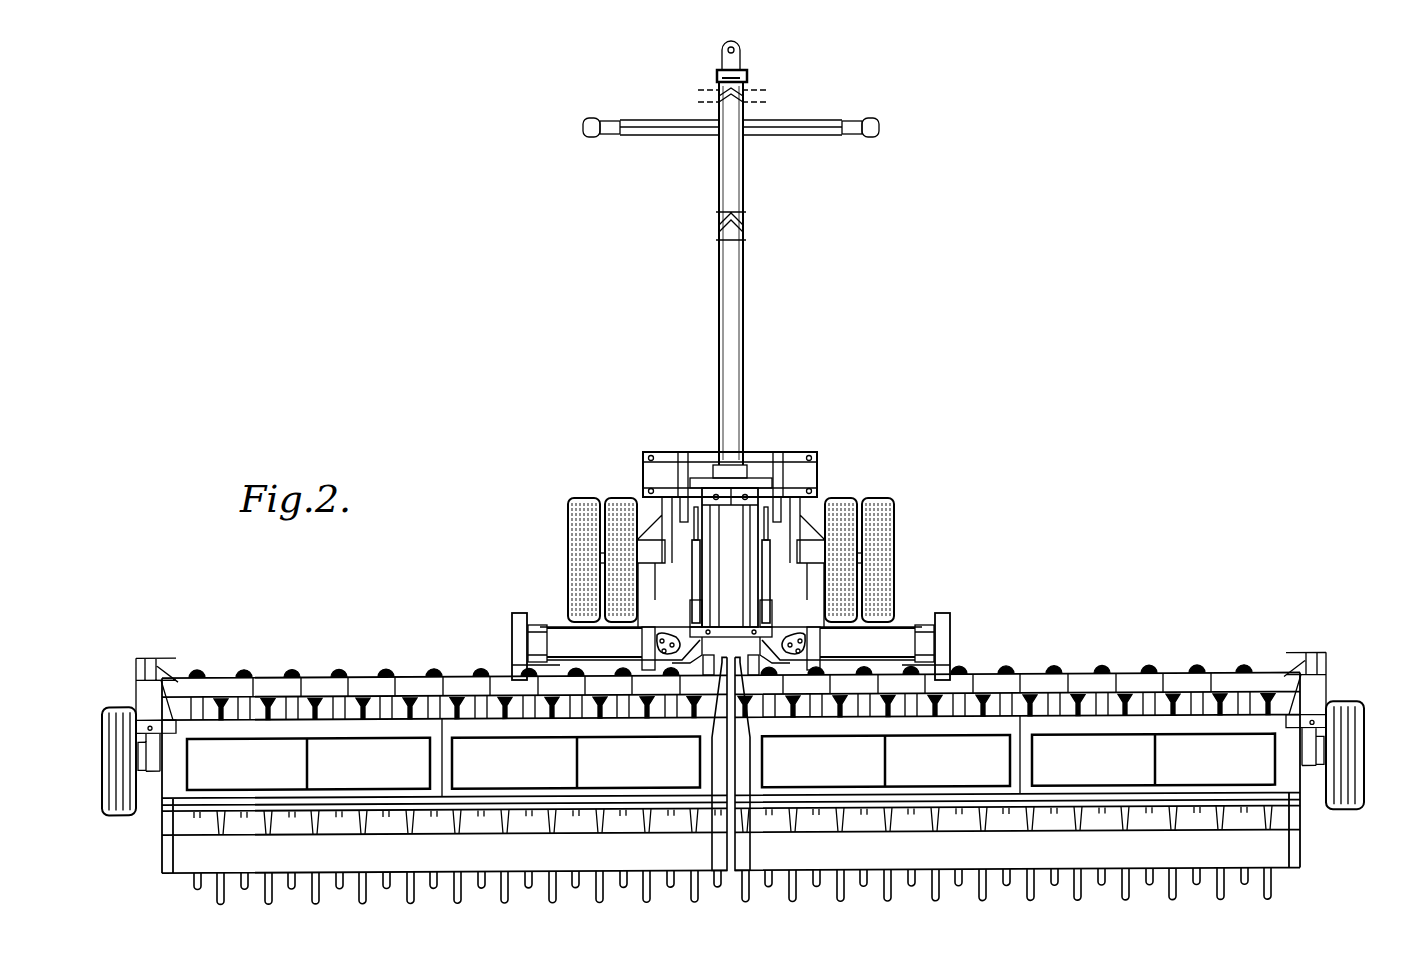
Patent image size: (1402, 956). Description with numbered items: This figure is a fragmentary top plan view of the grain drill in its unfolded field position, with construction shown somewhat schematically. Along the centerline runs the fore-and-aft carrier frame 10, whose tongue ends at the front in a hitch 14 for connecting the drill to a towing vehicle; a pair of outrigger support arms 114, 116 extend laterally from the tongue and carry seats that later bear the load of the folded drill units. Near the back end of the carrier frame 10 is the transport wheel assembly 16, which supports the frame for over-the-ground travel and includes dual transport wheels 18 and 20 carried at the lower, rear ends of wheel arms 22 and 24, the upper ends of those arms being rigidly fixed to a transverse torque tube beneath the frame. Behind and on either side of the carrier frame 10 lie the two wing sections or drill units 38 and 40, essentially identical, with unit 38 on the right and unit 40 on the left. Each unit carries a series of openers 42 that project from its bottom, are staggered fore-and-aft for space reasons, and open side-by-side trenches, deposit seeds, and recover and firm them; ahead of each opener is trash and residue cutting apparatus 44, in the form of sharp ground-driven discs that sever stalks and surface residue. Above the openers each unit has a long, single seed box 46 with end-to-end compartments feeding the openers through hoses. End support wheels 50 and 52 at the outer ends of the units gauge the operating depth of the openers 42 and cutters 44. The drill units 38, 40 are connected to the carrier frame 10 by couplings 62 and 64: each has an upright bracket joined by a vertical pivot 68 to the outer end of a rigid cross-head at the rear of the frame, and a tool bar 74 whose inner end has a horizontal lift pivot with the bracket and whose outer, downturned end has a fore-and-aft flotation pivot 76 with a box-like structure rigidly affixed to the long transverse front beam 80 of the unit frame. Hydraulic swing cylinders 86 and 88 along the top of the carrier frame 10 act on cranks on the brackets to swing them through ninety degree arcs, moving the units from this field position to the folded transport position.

The carrier frame 10 is at (779, 338).
The hitch 14 is at (738, 48).
The transport wheel assembly 16 is at (899, 487).
The dual transport wheel 18 is at (832, 500).
The dual transport wheel 20 is at (580, 500).
The wheel arm 22 is at (790, 545).
The wheel arm 24 is at (665, 545).
The drill unit 38 is at (1212, 646).
The drill unit 40 is at (320, 638).
The opener 42 is at (215, 826).
The trash and residue cutting apparatus 44 is at (245, 702).
The seed box 46 is at (490, 760).
The end support wheel 50 is at (1325, 800).
The end support wheel 52 is at (112, 812).
The coupling 62 is at (905, 611).
The coupling 64 is at (555, 597).
The vertical pivot 68 is at (642, 660).
The tool bar 74 is at (540, 645).
The flotation pivot 76 is at (538, 624).
The front beam 80 is at (352, 688).
The hydraulic swing cylinder 86 is at (768, 604).
The hydraulic swing cylinder 88 is at (690, 614).
The outrigger support arm 114 is at (805, 118).
The outrigger support arm 116 is at (655, 118).